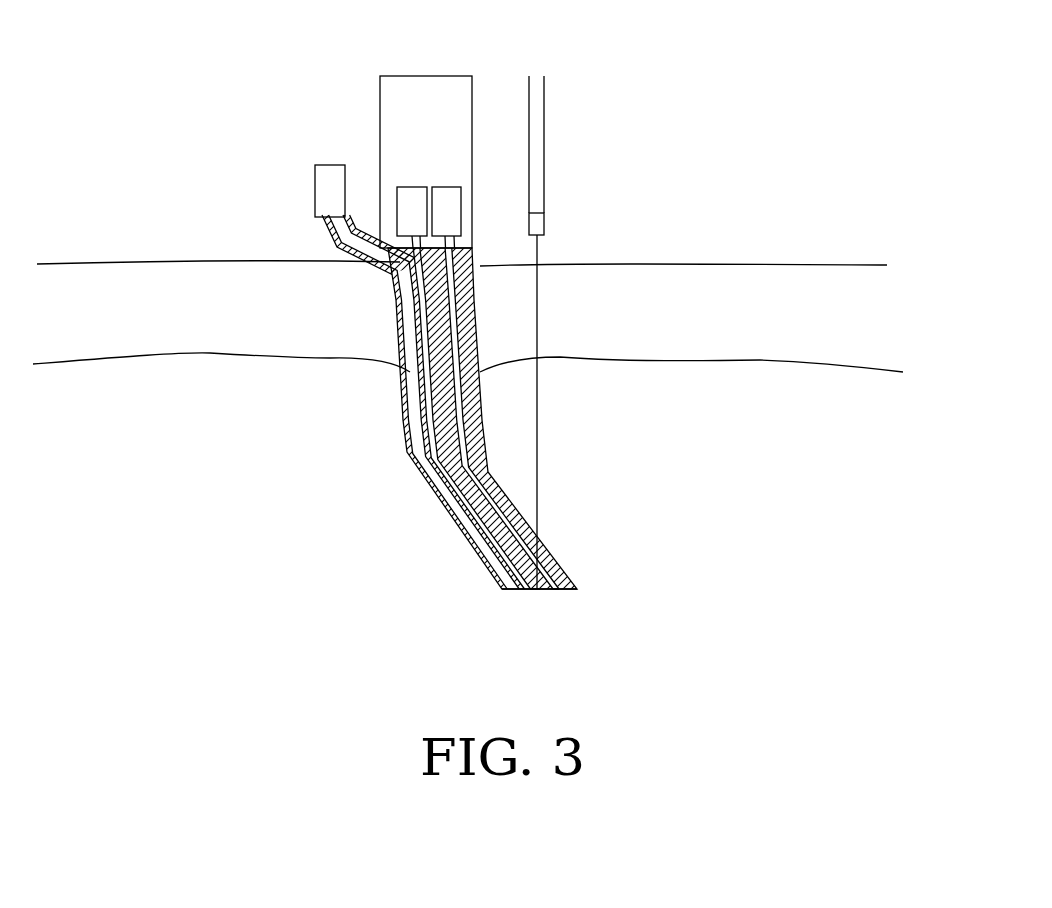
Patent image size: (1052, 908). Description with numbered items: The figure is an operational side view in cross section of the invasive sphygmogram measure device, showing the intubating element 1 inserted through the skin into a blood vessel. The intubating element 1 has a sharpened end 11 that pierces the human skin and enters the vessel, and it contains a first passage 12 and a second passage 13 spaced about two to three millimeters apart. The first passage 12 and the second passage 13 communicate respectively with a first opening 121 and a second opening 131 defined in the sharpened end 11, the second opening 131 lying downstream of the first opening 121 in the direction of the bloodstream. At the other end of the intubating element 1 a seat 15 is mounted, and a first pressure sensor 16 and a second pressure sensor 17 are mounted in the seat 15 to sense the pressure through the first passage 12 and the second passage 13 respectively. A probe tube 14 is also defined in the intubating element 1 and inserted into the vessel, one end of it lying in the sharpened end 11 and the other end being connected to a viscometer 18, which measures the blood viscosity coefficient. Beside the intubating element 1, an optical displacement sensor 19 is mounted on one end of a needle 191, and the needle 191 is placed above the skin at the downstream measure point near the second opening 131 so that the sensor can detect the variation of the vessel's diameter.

The intubating element 1 is at (490, 432).
The sharpened end 11 is at (575, 583).
The first passage 12 is at (505, 495).
The first opening 121 is at (550, 590).
The second passage 13 is at (440, 470).
The second opening 131 is at (540, 589).
The probe tube 14 is at (412, 415).
The seat 15 is at (430, 115).
The first pressure sensor 16 is at (453, 210).
The second pressure sensor 17 is at (412, 217).
The viscometer 18 is at (323, 187).
The optical displacement sensor 19 is at (540, 342).
The needle 191 is at (530, 199).